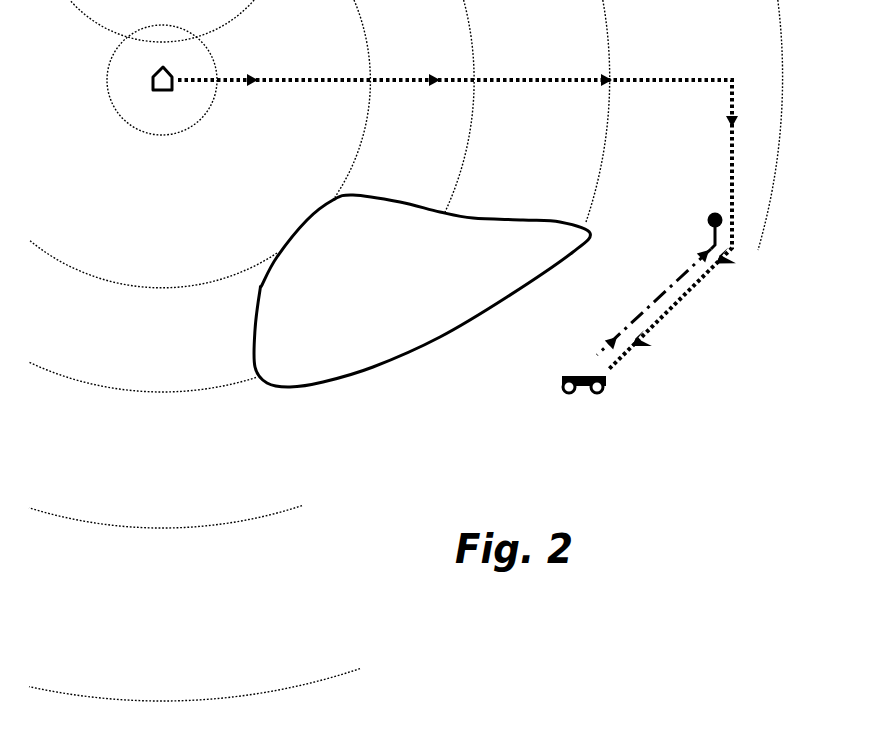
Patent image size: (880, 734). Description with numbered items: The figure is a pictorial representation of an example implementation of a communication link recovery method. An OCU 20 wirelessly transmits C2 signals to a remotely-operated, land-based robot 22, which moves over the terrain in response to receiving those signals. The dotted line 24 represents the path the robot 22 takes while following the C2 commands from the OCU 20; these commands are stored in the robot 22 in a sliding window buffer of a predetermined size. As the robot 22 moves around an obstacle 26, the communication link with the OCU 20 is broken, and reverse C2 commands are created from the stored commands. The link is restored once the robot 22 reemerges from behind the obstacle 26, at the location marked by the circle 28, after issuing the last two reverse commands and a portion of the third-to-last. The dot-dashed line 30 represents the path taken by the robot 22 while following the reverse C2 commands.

The OCU 20 is at (153, 81).
The robot 22 is at (607, 388).
The dotted line 24 is at (552, 77).
The obstacle 26 is at (373, 363).
The circle 28 is at (707, 220).
The dot-dashed line 30 is at (648, 308).